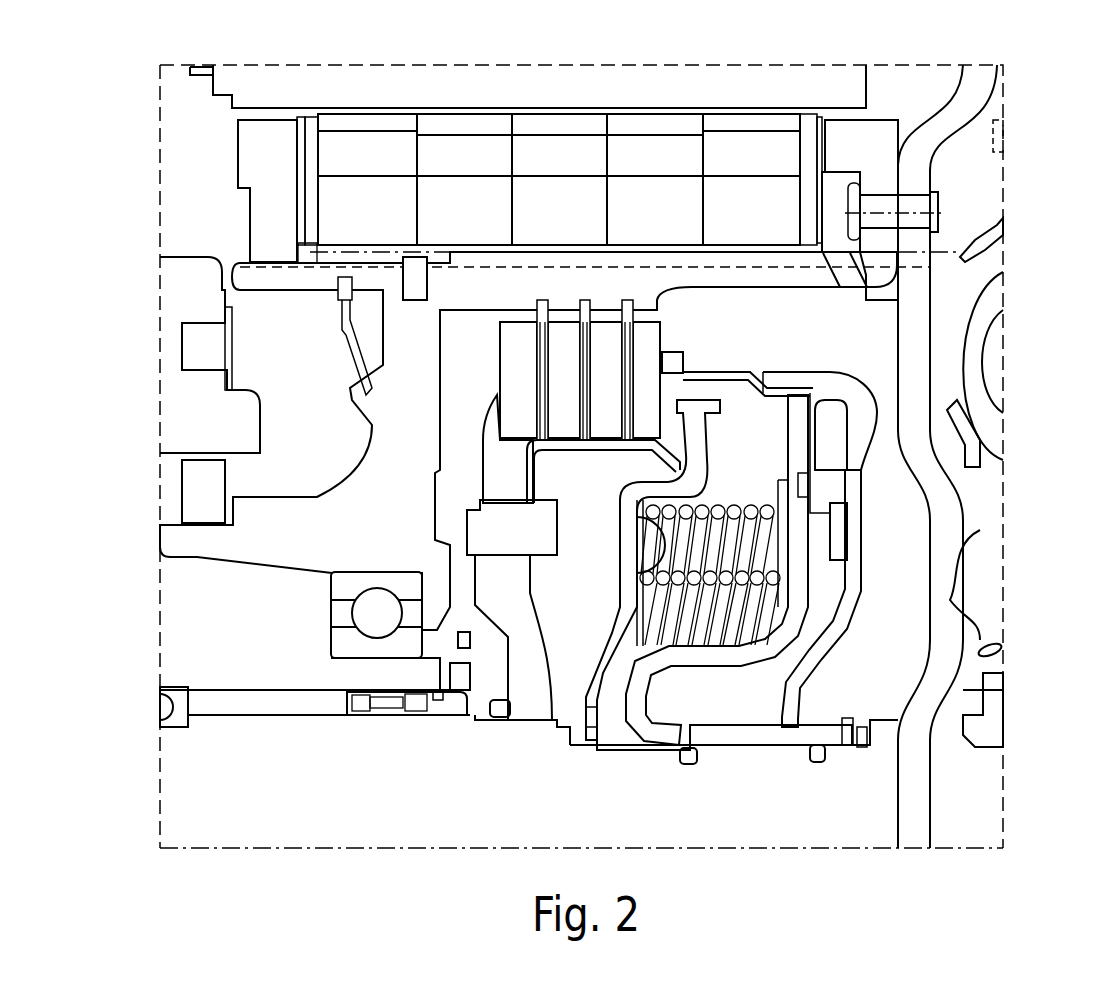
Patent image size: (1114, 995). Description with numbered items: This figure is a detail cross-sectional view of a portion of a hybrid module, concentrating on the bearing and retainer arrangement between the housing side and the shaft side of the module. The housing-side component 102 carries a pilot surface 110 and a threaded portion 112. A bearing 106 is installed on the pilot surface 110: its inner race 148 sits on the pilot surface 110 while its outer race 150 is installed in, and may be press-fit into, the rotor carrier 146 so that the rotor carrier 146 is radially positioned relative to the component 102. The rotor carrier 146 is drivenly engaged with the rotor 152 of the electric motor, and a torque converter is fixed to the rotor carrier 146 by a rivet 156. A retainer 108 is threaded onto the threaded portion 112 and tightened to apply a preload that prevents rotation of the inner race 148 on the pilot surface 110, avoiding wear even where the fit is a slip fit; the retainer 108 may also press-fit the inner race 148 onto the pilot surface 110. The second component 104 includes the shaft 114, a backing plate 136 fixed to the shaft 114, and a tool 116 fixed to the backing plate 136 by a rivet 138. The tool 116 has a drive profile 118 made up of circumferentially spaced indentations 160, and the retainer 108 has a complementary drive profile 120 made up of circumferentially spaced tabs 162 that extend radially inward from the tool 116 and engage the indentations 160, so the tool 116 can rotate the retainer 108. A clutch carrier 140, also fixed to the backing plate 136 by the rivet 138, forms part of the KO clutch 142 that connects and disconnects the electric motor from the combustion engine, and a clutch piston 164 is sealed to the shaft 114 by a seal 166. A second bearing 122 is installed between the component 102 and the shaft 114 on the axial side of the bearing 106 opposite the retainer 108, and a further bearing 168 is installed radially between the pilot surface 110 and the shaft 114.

The component 102 is at (170, 664).
The component 104 is at (530, 660).
The bearing 106 is at (340, 575).
The retainer 108 is at (442, 688).
The pilot surface 110 is at (343, 663).
The threaded portion 112 is at (470, 680).
The shaft 114 is at (538, 806).
The tool 116 is at (243, 589).
The drive profile 118 is at (534, 604).
The drive profile 120 is at (545, 785).
The bearing 122 is at (176, 707).
The backing plate 136 is at (510, 405).
The rivet 138 is at (490, 539).
The clutch carrier 140 is at (532, 470).
The KO clutch 142 is at (703, 348).
The rotor carrier 146 is at (374, 509).
The inner race 148 is at (347, 633).
The outer race 150 is at (347, 613).
The rotor 152 is at (368, 195).
The rivet 156 is at (917, 207).
The indentations 160 is at (477, 680).
The tabs 162 is at (464, 641).
The clutch piston 164 is at (745, 655).
The seal 166 is at (688, 764).
The bearing 168 is at (390, 705).